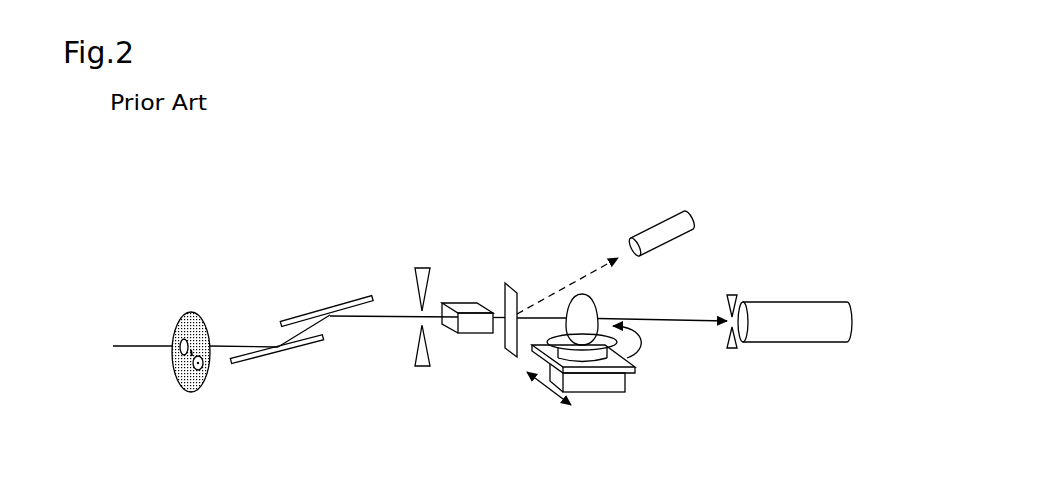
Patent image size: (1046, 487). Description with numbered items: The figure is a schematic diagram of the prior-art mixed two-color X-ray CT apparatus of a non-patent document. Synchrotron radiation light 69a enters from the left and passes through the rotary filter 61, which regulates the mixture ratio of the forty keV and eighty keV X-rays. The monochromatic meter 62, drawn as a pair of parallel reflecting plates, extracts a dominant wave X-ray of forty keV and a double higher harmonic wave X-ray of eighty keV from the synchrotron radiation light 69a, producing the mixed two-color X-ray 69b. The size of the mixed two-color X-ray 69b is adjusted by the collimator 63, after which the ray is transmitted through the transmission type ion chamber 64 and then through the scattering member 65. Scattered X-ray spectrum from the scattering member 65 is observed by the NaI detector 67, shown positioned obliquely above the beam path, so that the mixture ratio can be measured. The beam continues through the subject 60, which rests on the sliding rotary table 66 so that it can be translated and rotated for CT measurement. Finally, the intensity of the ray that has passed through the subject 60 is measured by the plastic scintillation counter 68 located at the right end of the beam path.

The subject 60 is at (589, 313).
The rotary filter 61 is at (188, 320).
The monochromatic meter 62 is at (289, 309).
The collimator 63 is at (418, 269).
The transmission type ion chamber 64 is at (467, 303).
The scattering member 65 is at (508, 297).
The sliding rotary table 66 is at (619, 403).
The NaI detector 67 is at (660, 228).
The plastic scintillation counter 68 is at (770, 328).
The synchrotron radiation light 69a is at (135, 348).
The mixed two-color X-ray 69b is at (382, 319).